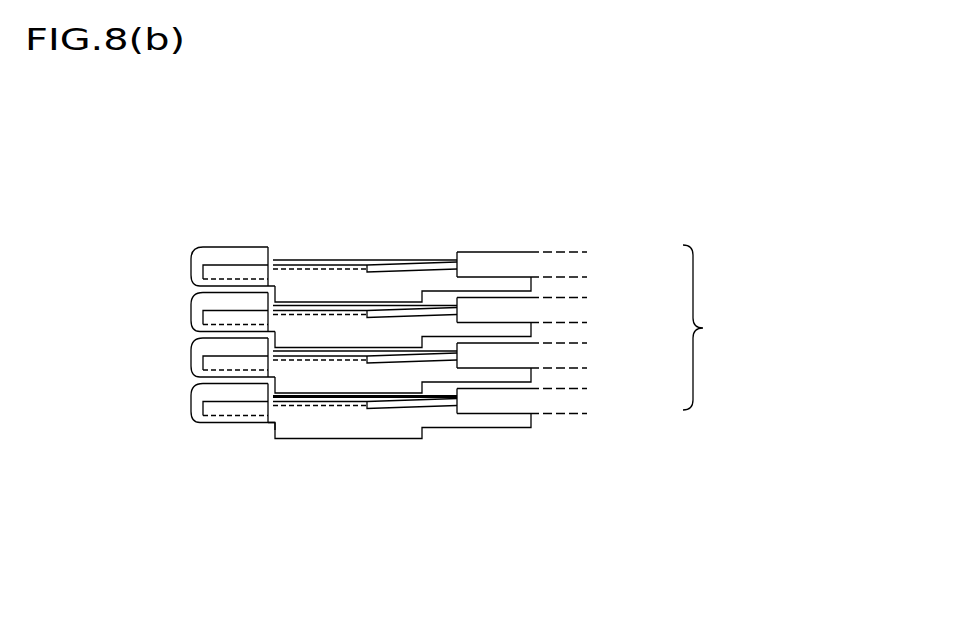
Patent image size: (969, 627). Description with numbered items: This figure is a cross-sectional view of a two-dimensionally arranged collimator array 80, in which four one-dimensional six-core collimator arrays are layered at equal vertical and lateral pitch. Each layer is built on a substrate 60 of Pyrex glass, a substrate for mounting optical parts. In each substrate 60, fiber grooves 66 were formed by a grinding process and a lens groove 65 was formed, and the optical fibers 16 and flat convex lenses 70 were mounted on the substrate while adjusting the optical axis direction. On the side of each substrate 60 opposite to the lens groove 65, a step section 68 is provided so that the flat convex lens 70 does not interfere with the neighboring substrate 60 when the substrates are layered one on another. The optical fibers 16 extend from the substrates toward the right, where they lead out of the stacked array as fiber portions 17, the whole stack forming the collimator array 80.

The flat convex lens 70 is at (226, 257).
The substrate 60 is at (325, 277).
The optical fiber 16 is at (426, 257).
The lead wire 17 is at (548, 258).
The two-dimensionally arranged collimator array 80 is at (732, 327).
The lens groove 65 is at (220, 412).
The fiber groove 66 is at (340, 400).
The step section 68 is at (265, 421).